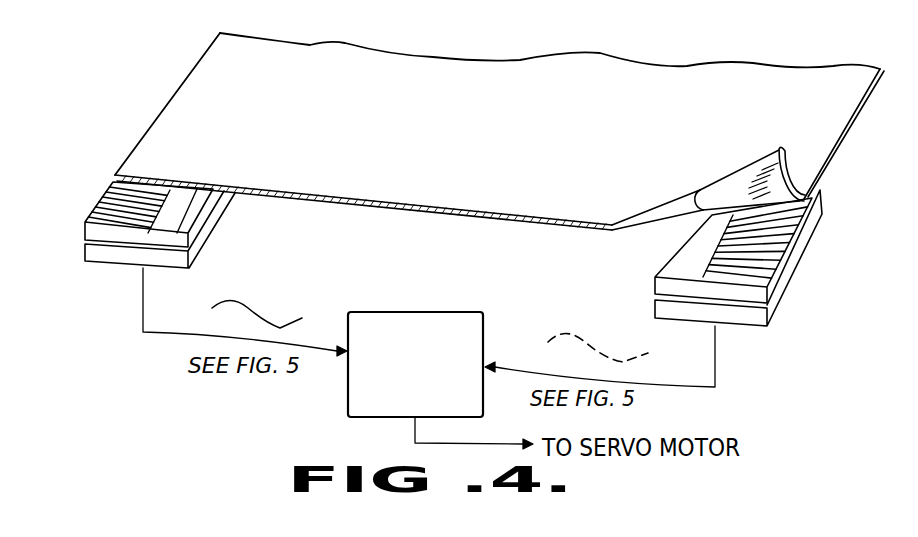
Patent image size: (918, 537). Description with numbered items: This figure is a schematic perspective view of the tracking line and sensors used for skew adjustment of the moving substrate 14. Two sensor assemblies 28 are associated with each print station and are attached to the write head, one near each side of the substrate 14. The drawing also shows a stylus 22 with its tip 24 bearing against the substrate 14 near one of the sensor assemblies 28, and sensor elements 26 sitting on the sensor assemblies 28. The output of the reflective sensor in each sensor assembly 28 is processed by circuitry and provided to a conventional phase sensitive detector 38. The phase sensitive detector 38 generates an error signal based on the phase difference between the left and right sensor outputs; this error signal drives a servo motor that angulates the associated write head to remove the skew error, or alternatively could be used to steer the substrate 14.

The substrate 14 is at (521, 135).
The stylus 22 is at (753, 165).
The stylus tip 24 is at (684, 193).
The sensor element 26 is at (83, 232).
The sensor assembly 28 is at (118, 262).
The phase sensitive detector 38 is at (457, 312).